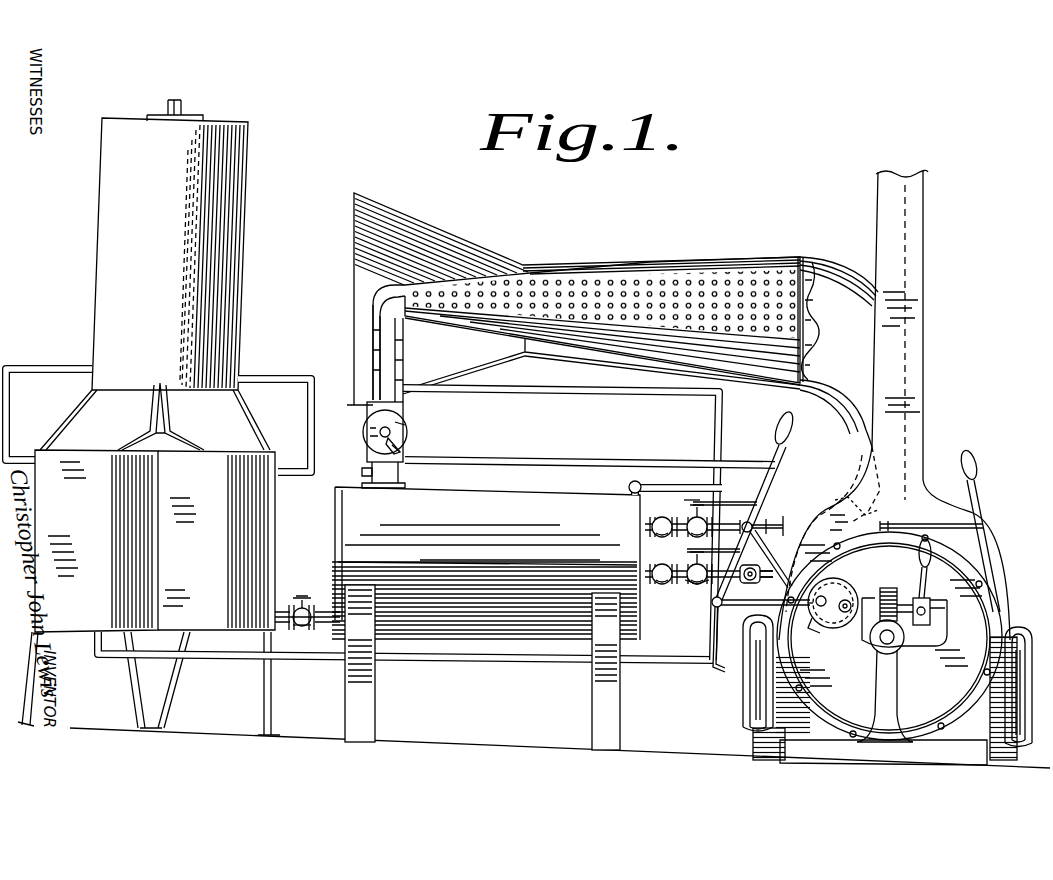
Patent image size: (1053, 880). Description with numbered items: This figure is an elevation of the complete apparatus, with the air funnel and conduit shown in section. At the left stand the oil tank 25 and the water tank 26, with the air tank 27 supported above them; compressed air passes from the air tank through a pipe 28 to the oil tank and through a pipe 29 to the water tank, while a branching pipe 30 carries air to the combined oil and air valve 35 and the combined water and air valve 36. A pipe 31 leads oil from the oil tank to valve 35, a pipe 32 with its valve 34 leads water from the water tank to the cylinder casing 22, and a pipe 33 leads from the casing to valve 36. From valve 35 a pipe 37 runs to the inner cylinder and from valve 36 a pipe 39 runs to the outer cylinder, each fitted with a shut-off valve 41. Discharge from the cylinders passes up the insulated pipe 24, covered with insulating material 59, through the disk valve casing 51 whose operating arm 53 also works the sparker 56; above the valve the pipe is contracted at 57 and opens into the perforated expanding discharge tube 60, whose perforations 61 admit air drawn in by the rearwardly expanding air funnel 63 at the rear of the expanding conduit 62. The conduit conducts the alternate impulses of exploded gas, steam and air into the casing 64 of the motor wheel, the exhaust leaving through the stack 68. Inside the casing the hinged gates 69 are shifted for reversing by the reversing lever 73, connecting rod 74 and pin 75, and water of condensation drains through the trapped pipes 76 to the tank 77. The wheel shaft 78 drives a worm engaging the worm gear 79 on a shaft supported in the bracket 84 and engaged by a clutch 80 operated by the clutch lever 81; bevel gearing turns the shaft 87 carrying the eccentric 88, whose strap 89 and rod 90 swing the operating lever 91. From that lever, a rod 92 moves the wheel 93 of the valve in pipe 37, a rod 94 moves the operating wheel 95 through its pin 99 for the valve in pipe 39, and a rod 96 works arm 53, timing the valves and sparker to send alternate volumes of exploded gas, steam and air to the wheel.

The cylinder casing 22 is at (486, 618).
The pipe 24 is at (400, 472).
The oil tank 25 is at (96, 541).
The water tank 26 is at (216, 540).
The air tank 27 is at (170, 245).
The pipe 28 is at (50, 375).
The pipe 29 is at (313, 423).
The pipe 30 is at (558, 392).
The pipe 31 is at (318, 660).
The pipe 32 is at (299, 603).
The pipe 33 is at (664, 490).
The valve 34 is at (302, 635).
The combined oil and air valve 35 is at (756, 564).
The combined water and air valve 36 is at (766, 543).
The pipe 37 is at (650, 570).
The pipe 39 is at (650, 517).
The shut-off valve 41 is at (697, 585).
The valve casing 51 is at (402, 425).
The operating arm 53 is at (402, 450).
The sparker 56 is at (362, 471).
The contraction 57 is at (403, 354).
The insulating material 59 is at (373, 352).
The expanding discharge tube 60 is at (625, 334).
The perforations 61 is at (624, 272).
The expanding conduit 62 is at (672, 262).
The air funnel 63 is at (432, 222).
The casing 64 is at (937, 612).
The exhaust pipe or stack 68 is at (925, 272).
The gates 69 is at (842, 505).
The reversing lever 73 is at (980, 512).
The connecting rod 74 is at (940, 521).
The pin 75 is at (878, 546).
The pipes 76 is at (743, 680).
The tank 77 is at (1026, 750).
The wheel shaft 78 is at (877, 655).
The worm gear 79 is at (898, 660).
The clutch 80 is at (935, 609).
The clutch lever 81 is at (920, 565).
The bracket 84 is at (938, 646).
The shaft 87 is at (850, 602).
The eccentric 88 is at (828, 583).
The eccentric strap 89 is at (822, 637).
The rod 90 is at (746, 606).
The operating lever 91 is at (766, 488).
The rod 92 is at (713, 557).
The valve wheel 93 is at (688, 556).
The rod 94 is at (740, 500).
The operating wheel 95 is at (686, 510).
The rod 96 is at (633, 452).
The pin 99 is at (691, 493).